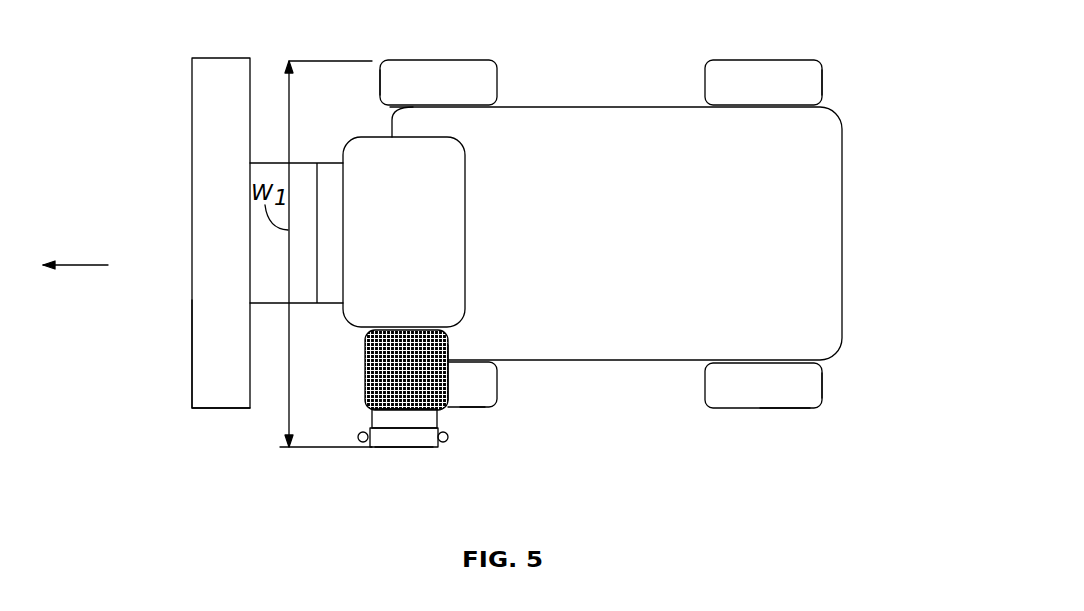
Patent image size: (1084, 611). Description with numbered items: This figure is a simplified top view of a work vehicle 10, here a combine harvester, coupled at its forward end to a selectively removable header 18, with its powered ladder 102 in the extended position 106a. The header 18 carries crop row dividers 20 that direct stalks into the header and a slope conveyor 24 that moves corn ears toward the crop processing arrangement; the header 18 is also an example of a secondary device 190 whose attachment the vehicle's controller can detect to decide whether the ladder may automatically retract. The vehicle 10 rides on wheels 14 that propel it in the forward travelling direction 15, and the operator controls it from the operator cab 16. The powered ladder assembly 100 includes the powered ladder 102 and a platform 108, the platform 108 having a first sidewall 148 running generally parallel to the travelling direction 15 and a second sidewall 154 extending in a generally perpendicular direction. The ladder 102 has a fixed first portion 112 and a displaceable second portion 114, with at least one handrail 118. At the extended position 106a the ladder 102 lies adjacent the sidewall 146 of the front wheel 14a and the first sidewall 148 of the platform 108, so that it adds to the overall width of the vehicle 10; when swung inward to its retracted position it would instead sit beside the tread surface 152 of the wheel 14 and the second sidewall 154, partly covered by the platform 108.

The work vehicle 10 is at (887, 140).
The wheels 14 is at (498, 83).
The front wheel 14a is at (497, 376).
The forward travelling direction 15 is at (83, 265).
The operator cab 16 is at (418, 250).
The header 18 is at (171, 233).
The secondary device 190 is at (180, 213).
The crop row dividers 20 is at (192, 382).
The slope conveyor 24 is at (273, 303).
The powered ladder assembly 100 is at (433, 474).
The extended position 106a is at (433, 474).
The powered ladder 102 is at (408, 437).
The platform 108 is at (447, 390).
The first portion 112 is at (398, 438).
The second portion 114 is at (385, 420).
The handrail 118 is at (362, 443).
The sidewall 146 is at (473, 407).
The first sidewall 148 is at (425, 418).
The tread surface 152 is at (380, 90).
The second sidewall 154 is at (365, 392).